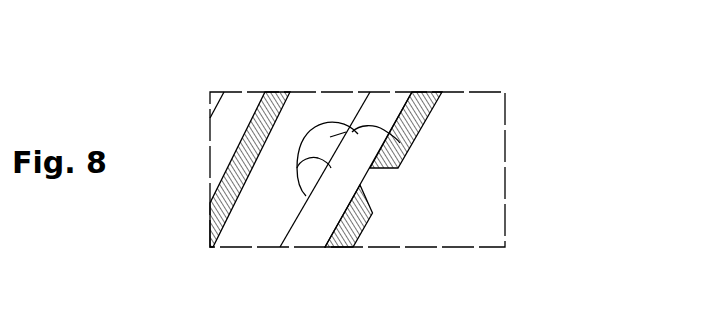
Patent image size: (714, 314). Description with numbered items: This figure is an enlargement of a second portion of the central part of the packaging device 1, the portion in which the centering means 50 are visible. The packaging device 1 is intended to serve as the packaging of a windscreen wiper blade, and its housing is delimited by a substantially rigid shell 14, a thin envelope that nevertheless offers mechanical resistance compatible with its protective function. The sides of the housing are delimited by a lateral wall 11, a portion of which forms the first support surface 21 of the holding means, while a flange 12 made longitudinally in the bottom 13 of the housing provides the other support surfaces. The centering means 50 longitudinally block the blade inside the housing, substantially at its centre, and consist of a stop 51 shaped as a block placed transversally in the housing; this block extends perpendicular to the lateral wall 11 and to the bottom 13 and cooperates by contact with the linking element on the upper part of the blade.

The packaging device 1 is at (402, 192).
The wall 11 is at (295, 221).
The flange 12 is at (236, 214).
The bottom 13 is at (323, 99).
The shell 14 is at (421, 113).
The first support surface 21 is at (352, 108).
The centering means 50 is at (292, 160).
The stop 51 is at (400, 143).